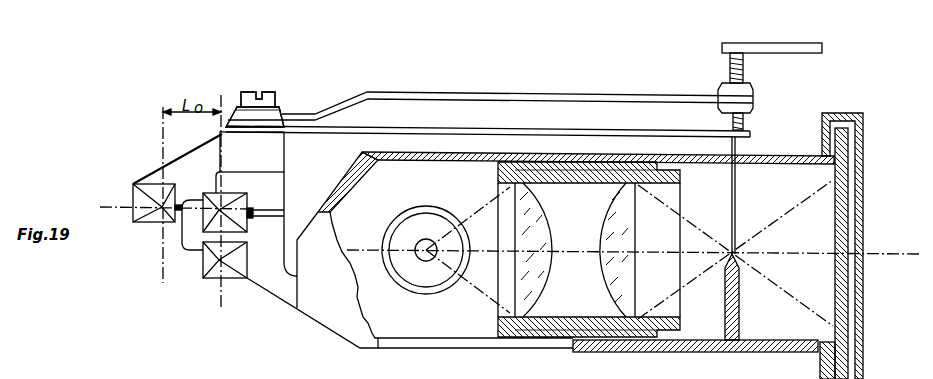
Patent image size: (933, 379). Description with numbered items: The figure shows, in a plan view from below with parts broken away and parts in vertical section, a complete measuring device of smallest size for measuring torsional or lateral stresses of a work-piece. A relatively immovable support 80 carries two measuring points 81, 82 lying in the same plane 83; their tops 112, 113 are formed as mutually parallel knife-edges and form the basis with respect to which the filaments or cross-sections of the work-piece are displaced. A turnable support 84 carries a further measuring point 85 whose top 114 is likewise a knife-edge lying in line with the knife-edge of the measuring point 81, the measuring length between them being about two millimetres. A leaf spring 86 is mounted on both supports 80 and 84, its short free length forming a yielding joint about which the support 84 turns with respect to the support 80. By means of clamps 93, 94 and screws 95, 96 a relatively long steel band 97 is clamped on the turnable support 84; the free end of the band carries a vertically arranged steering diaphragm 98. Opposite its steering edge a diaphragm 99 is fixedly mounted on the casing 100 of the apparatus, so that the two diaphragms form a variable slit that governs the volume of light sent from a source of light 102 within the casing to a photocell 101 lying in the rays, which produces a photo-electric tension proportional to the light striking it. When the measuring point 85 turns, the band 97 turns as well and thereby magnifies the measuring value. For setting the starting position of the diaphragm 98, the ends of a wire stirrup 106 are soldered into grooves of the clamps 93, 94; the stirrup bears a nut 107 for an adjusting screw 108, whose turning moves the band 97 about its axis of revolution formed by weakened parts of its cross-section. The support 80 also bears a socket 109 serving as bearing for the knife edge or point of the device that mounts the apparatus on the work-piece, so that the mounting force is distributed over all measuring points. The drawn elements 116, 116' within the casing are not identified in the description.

The support 80 is at (287, 293).
The measuring point 81 is at (238, 207).
The measuring point 82 is at (235, 258).
The plane 83 is at (248, 139).
The turnable support 84 is at (190, 167).
The measuring point 85 is at (140, 202).
The leaf spring 86 is at (267, 216).
The clamp 93 is at (255, 117).
The clamp 94 is at (265, 122).
The screw 95 is at (258, 99).
The screw 96 is at (264, 100).
The steel band 97 is at (447, 128).
The steering diaphragm 98 is at (736, 200).
The diaphragm 99 is at (739, 315).
The casing 100 is at (678, 350).
The photocell 101 is at (848, 230).
The source of light 102 is at (411, 268).
The wire stirrup 106 is at (497, 95).
The nut 107 is at (740, 93).
The adjusting screw 108 is at (728, 66).
The socket 109 is at (193, 223).
The top of measuring point 112 is at (219, 215).
The top of measuring point 113 is at (218, 263).
The top of measuring point 114 is at (155, 222).
The lens 116 is at (555, 250).
The lens 116' is at (594, 250).